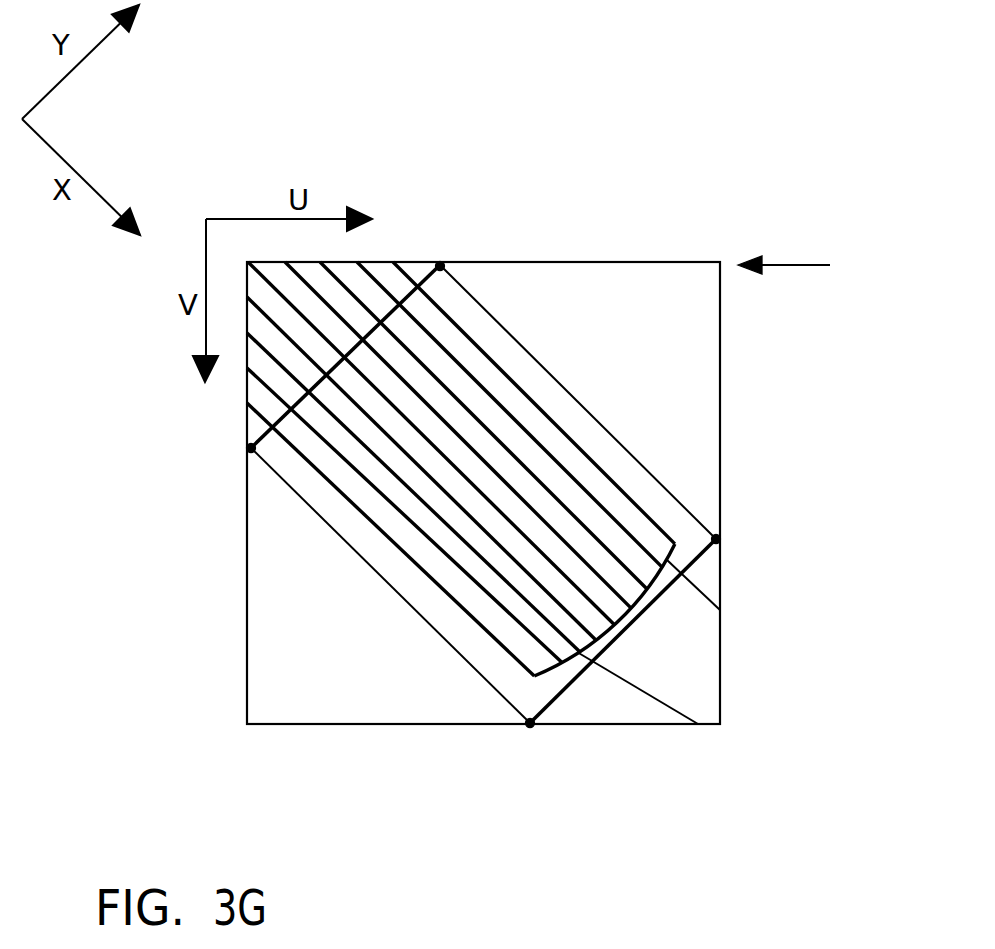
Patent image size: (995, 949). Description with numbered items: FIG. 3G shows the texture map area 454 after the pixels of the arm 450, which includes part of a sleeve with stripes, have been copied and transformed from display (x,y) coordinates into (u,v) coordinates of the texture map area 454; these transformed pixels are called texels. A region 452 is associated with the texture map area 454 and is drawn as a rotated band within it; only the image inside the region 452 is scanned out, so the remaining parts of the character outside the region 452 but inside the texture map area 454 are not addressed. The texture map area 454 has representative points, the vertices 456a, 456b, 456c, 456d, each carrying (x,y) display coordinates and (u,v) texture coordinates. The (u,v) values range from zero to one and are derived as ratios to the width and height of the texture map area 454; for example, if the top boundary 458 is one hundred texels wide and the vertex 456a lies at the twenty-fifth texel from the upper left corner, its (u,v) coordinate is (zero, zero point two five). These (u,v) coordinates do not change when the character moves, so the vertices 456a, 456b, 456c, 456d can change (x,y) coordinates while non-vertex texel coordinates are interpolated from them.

The arm 450 is at (530, 468).
The region 452 is at (650, 467).
The texture map area 454 is at (247, 615).
The vertex 456a is at (440, 266).
The vertex 456b is at (251, 448).
The vertex 456c is at (716, 539).
The vertex 456d is at (530, 724).
The top boundary 458 is at (810, 265).